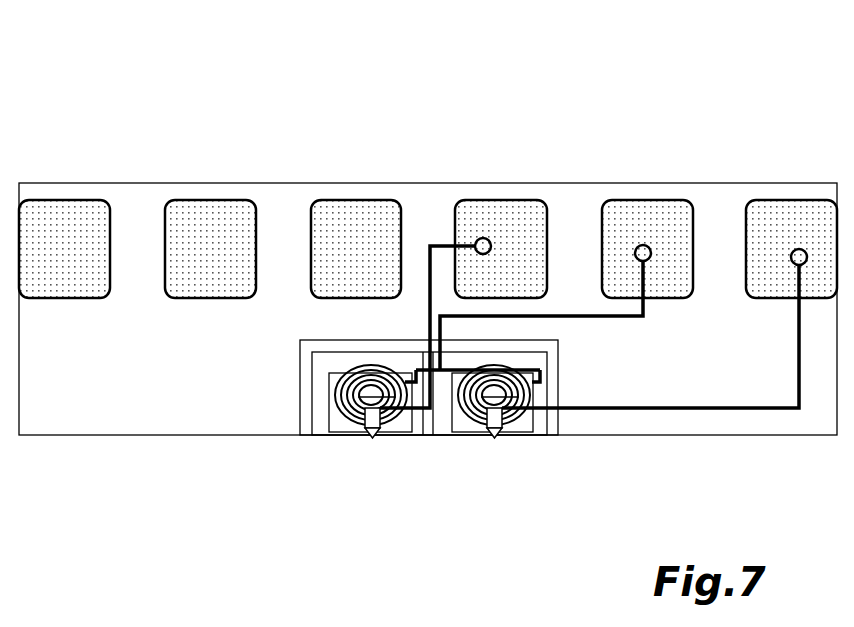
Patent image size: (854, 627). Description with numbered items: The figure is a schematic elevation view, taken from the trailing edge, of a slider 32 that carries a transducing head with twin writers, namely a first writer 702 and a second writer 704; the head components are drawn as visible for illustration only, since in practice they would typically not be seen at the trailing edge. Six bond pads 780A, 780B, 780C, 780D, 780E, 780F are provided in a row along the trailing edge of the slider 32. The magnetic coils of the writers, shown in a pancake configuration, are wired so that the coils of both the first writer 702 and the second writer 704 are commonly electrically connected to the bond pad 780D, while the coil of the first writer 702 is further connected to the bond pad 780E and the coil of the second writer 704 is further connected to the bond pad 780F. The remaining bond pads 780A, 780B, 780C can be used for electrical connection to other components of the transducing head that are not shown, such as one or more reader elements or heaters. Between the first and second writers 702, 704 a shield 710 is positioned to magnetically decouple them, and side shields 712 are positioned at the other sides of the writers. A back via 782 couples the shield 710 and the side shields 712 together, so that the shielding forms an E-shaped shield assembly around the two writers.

The slider 32 is at (553, 116).
The bond pad 780A is at (62, 217).
The bond pad 780B is at (190, 217).
The bond pad 780C is at (333, 217).
The bond pad 780D is at (487, 218).
The bond pad 780E is at (623, 218).
The bond pad 780F is at (763, 218).
The back via 782 is at (342, 345).
The side shields 712 is at (305, 382).
The shield 710 is at (430, 424).
The first writer 702 is at (364, 447).
The second writer 704 is at (503, 450).